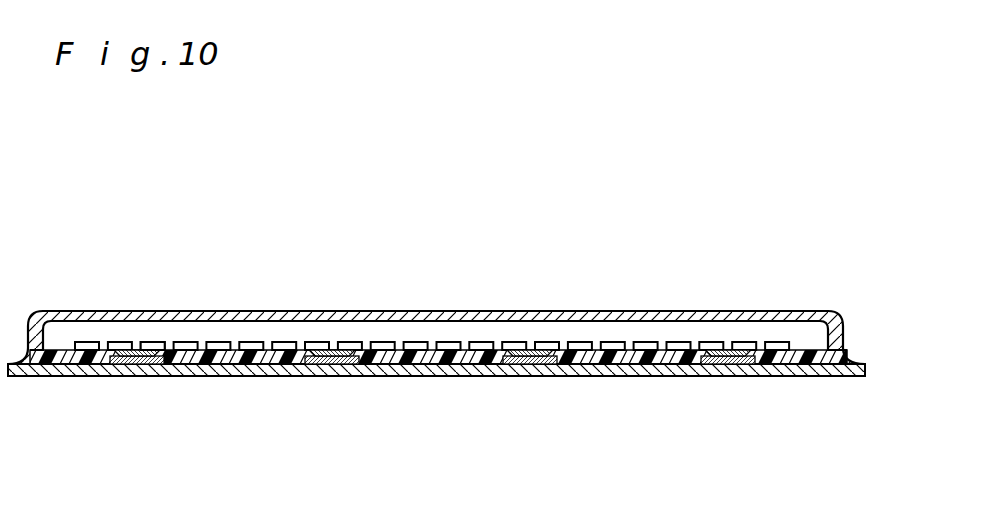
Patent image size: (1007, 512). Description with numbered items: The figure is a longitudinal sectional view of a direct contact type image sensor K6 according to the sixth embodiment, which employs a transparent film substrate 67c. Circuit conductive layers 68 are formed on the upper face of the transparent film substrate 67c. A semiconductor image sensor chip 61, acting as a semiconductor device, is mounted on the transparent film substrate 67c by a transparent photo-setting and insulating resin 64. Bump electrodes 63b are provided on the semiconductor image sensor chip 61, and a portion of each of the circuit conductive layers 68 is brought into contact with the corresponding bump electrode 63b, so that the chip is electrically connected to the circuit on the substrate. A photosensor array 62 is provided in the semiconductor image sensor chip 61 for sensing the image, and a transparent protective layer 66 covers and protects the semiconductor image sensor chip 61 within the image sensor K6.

The direct contact type image sensor K6 is at (821, 258).
The semiconductor image sensor chip 61 is at (207, 328).
The photosensor array 62 is at (288, 345).
The bump electrodes 63b is at (135, 345).
The transparent photo-setting and insulating resin 64 is at (472, 366).
The transparent protective layer 66 is at (112, 312).
The transparent film substrate 67c is at (120, 366).
The circuit conductive layers 68 is at (148, 362).